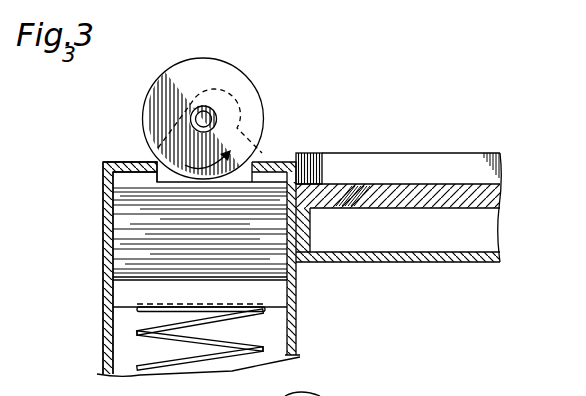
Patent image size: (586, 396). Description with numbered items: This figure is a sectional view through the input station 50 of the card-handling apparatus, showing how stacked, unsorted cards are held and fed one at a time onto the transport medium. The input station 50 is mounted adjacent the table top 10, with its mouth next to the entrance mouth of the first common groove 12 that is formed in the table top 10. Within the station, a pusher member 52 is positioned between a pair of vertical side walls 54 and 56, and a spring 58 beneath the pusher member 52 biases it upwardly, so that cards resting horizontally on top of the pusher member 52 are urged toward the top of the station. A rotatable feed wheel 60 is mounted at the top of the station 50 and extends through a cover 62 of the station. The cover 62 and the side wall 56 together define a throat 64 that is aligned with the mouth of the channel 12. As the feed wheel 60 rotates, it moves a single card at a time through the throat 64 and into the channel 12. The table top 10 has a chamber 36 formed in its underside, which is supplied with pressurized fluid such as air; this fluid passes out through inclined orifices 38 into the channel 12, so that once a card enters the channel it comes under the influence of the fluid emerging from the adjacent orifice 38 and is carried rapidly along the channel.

The table top 10 is at (428, 196).
The first common groove 12 is at (405, 166).
The chamber 36 is at (409, 238).
The orifices 38 is at (347, 207).
The input station 50 is at (101, 233).
The pusher member 52 is at (130, 289).
The vertical side wall 54 is at (110, 317).
The vertical side wall 56 is at (297, 313).
The spring 58 is at (263, 347).
The feed wheel 60 is at (243, 97).
The cover 62 is at (152, 160).
The throat 64 is at (296, 181).